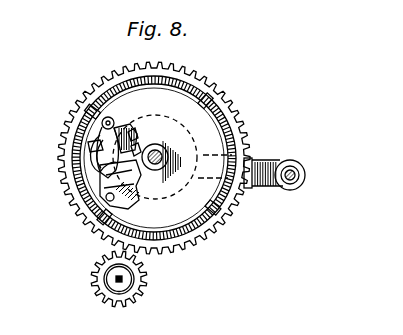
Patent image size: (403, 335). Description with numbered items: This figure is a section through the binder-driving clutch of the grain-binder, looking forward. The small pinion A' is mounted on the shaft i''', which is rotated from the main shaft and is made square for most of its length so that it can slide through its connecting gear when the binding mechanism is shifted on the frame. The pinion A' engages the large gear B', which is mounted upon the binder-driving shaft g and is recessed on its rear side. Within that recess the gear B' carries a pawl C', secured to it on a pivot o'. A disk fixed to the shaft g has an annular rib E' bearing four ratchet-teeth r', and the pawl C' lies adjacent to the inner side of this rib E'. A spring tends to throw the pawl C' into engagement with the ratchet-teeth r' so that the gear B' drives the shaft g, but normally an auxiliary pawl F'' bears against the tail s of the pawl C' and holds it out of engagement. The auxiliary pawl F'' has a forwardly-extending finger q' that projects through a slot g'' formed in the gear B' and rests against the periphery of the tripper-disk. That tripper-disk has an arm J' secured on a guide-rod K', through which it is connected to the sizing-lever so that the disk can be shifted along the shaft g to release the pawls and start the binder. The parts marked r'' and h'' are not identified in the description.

The gear B' is at (154, 152).
The ratchet-teeth r' is at (158, 172).
The rim key r'' is at (195, 104).
The binder-driving shaft g is at (162, 155).
The annular rib E' is at (176, 157).
The auxiliary pawl F'' is at (88, 145).
The finger q' is at (60, 150).
The tail s is at (100, 173).
The slot g'' is at (149, 115).
The pawl projection h'' is at (145, 138).
The pawl C' is at (130, 195).
The pivot o' is at (79, 210).
The arm J' is at (263, 162).
The guide-rod K' is at (303, 169).
The pinion A' is at (136, 278).
The shaft i''' is at (97, 292).